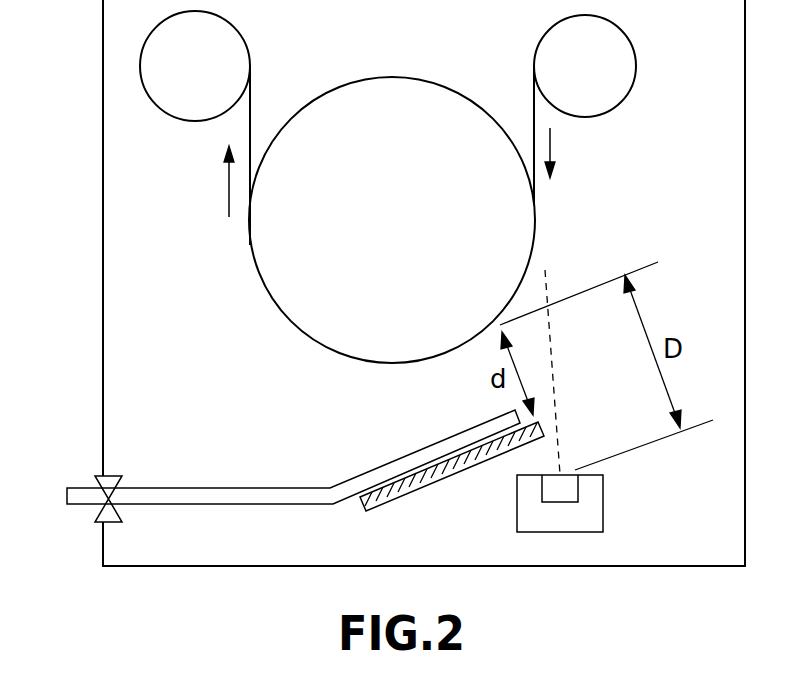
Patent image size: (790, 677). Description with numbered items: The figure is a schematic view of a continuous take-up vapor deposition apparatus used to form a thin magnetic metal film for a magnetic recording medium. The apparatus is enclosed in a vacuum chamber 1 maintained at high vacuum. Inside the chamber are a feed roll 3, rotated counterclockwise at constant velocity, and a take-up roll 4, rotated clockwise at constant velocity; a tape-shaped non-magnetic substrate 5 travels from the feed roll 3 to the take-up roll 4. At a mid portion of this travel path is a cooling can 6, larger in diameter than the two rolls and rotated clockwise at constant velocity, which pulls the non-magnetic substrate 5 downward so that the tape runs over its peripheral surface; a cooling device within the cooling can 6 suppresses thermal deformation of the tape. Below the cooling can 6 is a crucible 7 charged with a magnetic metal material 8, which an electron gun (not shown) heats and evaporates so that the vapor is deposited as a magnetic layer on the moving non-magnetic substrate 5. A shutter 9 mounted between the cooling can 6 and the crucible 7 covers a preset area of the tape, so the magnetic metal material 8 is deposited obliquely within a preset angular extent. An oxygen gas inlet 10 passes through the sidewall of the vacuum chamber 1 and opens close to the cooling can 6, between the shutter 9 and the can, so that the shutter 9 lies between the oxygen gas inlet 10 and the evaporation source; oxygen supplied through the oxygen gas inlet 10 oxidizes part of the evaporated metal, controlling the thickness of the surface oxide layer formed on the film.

The vacuum chamber 1 is at (746, 52).
The feed roll 3 is at (618, 52).
The take-up roll 4 is at (147, 68).
The non-magnetic substrate 5 is at (248, 126).
The cooling can 6 is at (277, 277).
The crucible 7 is at (590, 520).
The magnetic metal material 8 is at (575, 475).
The shutter 9 is at (368, 506).
The oxygen gas inlet 10 is at (277, 495).